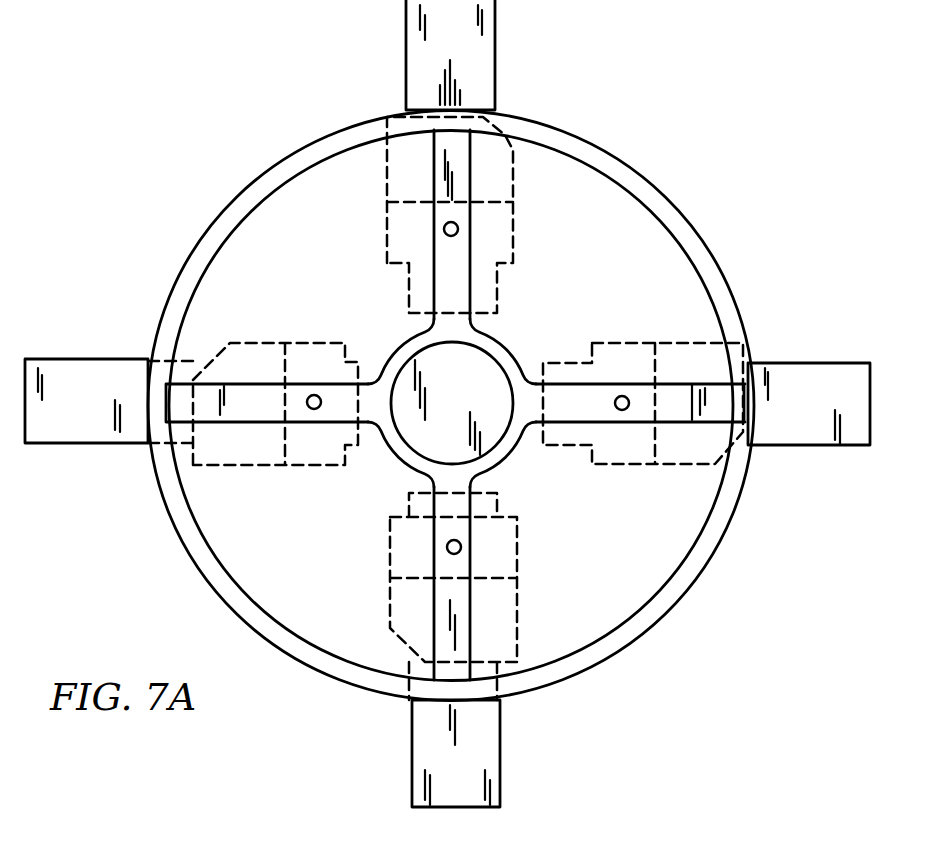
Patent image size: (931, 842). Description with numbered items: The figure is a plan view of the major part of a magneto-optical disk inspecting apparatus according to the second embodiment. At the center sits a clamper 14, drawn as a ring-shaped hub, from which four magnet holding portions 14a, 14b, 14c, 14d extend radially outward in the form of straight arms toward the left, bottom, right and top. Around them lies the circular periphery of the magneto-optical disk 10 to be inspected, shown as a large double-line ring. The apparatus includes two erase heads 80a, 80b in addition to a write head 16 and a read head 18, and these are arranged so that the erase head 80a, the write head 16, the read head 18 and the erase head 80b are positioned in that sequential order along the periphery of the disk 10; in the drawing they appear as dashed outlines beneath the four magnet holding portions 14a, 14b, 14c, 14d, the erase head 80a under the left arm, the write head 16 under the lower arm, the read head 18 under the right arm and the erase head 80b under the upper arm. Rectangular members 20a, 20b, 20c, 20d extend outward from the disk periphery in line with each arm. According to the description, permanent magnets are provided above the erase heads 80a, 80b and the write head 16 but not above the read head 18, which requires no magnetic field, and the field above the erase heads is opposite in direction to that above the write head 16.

The magneto-optical disk 10 is at (682, 203).
The clamper 14 is at (508, 346).
The magnet holding portion 14a is at (243, 421).
The magnet holding portion 14b is at (437, 600).
The magnet holding portion 14c is at (632, 383).
The magnet holding portion 14d is at (433, 176).
The write head 16 is at (520, 608).
The read head 18 is at (710, 343).
The left terminal block 20a is at (80, 443).
The bottom terminal block 20b is at (500, 766).
The right terminal block 20c is at (805, 447).
The top terminal block 20d is at (495, 40).
The erase head 80a is at (238, 343).
The erase head 80b is at (520, 165).